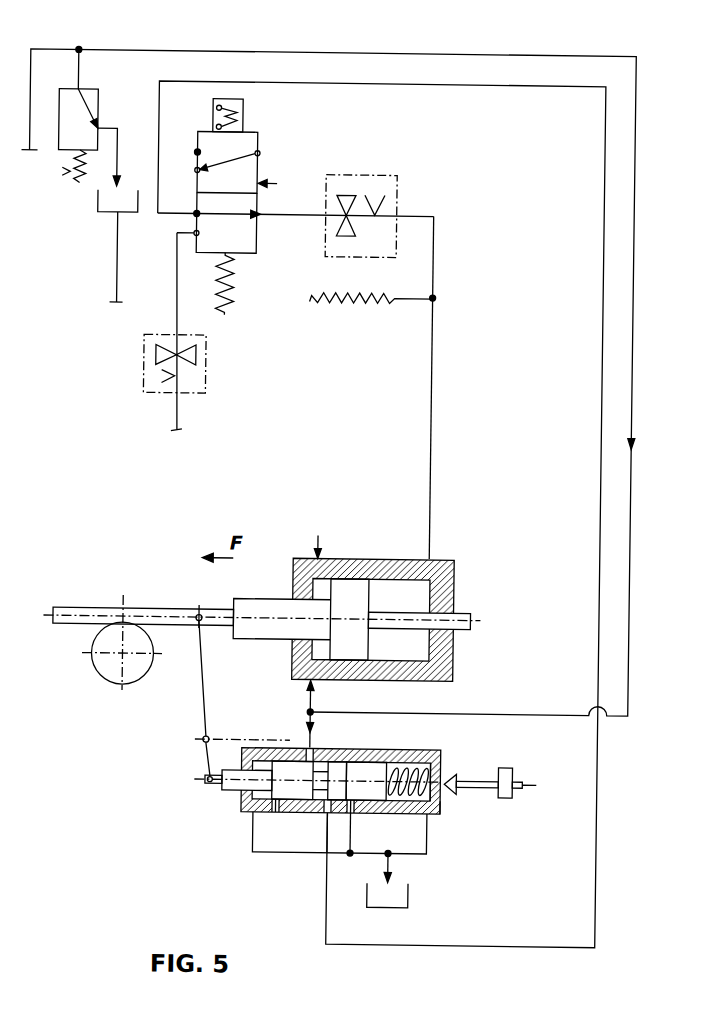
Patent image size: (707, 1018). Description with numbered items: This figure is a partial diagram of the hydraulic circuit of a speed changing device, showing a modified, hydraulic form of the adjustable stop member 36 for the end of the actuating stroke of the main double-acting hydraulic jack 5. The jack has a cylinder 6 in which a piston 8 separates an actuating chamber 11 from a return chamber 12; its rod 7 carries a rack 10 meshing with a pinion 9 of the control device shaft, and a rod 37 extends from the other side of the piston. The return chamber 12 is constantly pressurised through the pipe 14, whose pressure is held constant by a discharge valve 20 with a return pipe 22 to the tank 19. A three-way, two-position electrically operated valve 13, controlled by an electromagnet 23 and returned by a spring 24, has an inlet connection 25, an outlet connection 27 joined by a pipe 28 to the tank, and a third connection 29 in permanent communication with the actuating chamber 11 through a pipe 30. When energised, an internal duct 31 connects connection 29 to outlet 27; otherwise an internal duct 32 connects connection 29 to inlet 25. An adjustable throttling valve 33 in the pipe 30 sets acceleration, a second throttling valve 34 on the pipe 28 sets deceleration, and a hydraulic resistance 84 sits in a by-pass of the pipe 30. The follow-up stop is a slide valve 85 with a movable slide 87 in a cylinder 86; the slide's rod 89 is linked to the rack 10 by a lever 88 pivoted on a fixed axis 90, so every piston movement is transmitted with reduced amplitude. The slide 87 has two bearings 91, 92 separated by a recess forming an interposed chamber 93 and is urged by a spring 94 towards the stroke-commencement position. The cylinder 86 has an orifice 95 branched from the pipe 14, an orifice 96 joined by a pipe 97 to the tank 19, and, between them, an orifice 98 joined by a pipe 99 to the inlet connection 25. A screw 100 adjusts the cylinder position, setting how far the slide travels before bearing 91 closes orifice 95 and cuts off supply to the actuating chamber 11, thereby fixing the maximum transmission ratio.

The pipe 14 is at (237, 53).
The pipe 99 is at (480, 84).
The discharge valve 20 is at (93, 110).
The return pipe 22 is at (116, 158).
The electromagnet 23 is at (238, 115).
The internal duct 31 is at (225, 163).
The electrically operated valve 13 is at (282, 183).
The inlet connection 25 is at (176, 212).
The internal duct 32 is at (212, 218).
The third connection 29 is at (258, 217).
The outlet connection 27 is at (172, 235).
The pipe 28 is at (173, 300).
The spring 24 is at (232, 273).
The second adjustable throttling valve 34 is at (204, 368).
The adjustable throttling valve 33 is at (370, 175).
The hydraulic resistance 84 is at (345, 302).
The pipe 30 is at (430, 388).
The double-acting hydraulic jack 5 is at (319, 533).
The cylinder 6 is at (375, 559).
The piston rod 37 is at (472, 612).
The piston 8 is at (352, 657).
The rod 7 is at (257, 640).
The actuating chamber 11 is at (428, 650).
The return chamber 12 is at (318, 650).
The rack 10 is at (165, 611).
The pinion 9 is at (133, 684).
The lever 88 is at (205, 695).
The fixed axis 90 is at (204, 745).
The stop member 36 is at (179, 805).
The rod 89 is at (233, 792).
The bearing 91 is at (294, 762).
The orifice 95 is at (318, 764).
The interposed chamber 93 is at (340, 767).
The bearing 92 is at (381, 760).
The slide valve 85 is at (420, 767).
The spring 94 is at (440, 754).
The cylinder 86 is at (444, 810).
The screw 100 is at (478, 792).
The orifice 98 is at (331, 816).
The pipe 97 is at (355, 842).
The orifice 96 is at (356, 815).
The movable slide 87 is at (282, 812).
The tank 19 is at (414, 893).